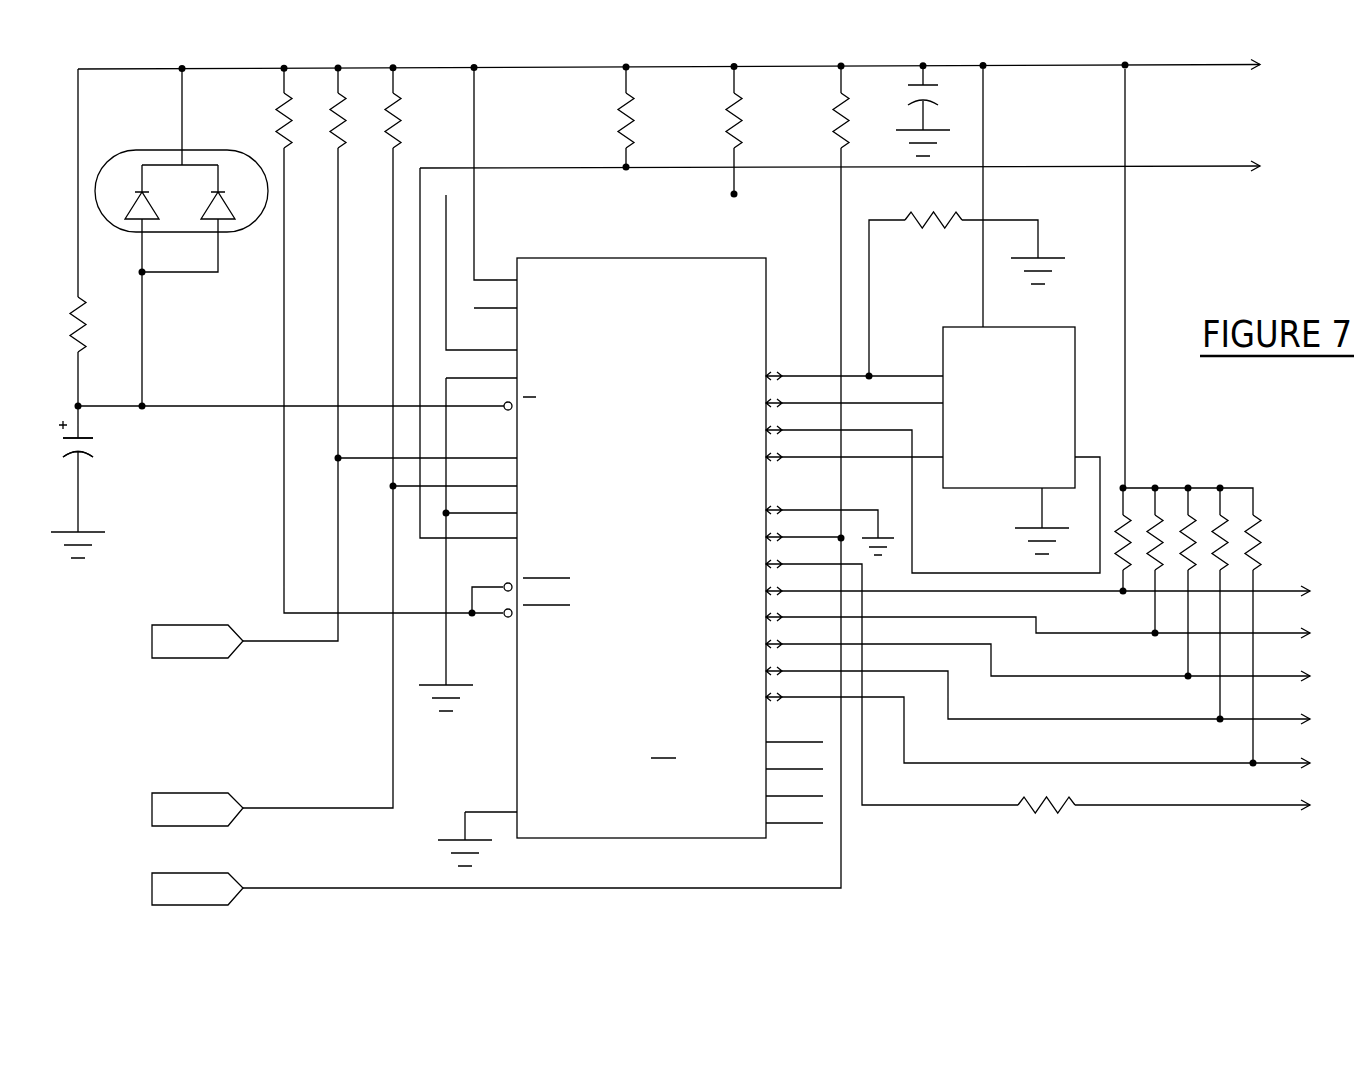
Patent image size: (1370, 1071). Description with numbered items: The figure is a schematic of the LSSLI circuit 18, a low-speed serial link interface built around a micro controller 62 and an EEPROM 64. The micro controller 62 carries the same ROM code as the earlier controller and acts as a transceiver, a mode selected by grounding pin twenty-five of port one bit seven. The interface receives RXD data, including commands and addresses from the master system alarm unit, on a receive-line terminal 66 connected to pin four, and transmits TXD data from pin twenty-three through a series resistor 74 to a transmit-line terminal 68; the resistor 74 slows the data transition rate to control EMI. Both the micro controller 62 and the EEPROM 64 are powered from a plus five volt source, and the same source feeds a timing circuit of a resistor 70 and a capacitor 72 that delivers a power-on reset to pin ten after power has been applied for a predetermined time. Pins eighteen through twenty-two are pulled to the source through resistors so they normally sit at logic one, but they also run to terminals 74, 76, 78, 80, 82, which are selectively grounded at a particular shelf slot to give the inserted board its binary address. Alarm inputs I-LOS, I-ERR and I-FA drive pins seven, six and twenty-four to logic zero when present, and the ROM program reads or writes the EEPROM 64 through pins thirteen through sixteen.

The LSSLI circuit 18 is at (914, 838).
The micro controller 62 is at (574, 695).
The EEPROM 64 is at (1027, 447).
The terminal 66 is at (1200, 166).
The terminal 68 is at (1262, 808).
The resistor 70 is at (84, 303).
The capacitor 72 is at (85, 440).
The resistor 74 is at (1290, 587).
The terminal 76 is at (1262, 636).
The terminal 78 is at (1262, 679).
The terminal 80 is at (1262, 722).
The terminal 82 is at (1262, 766).